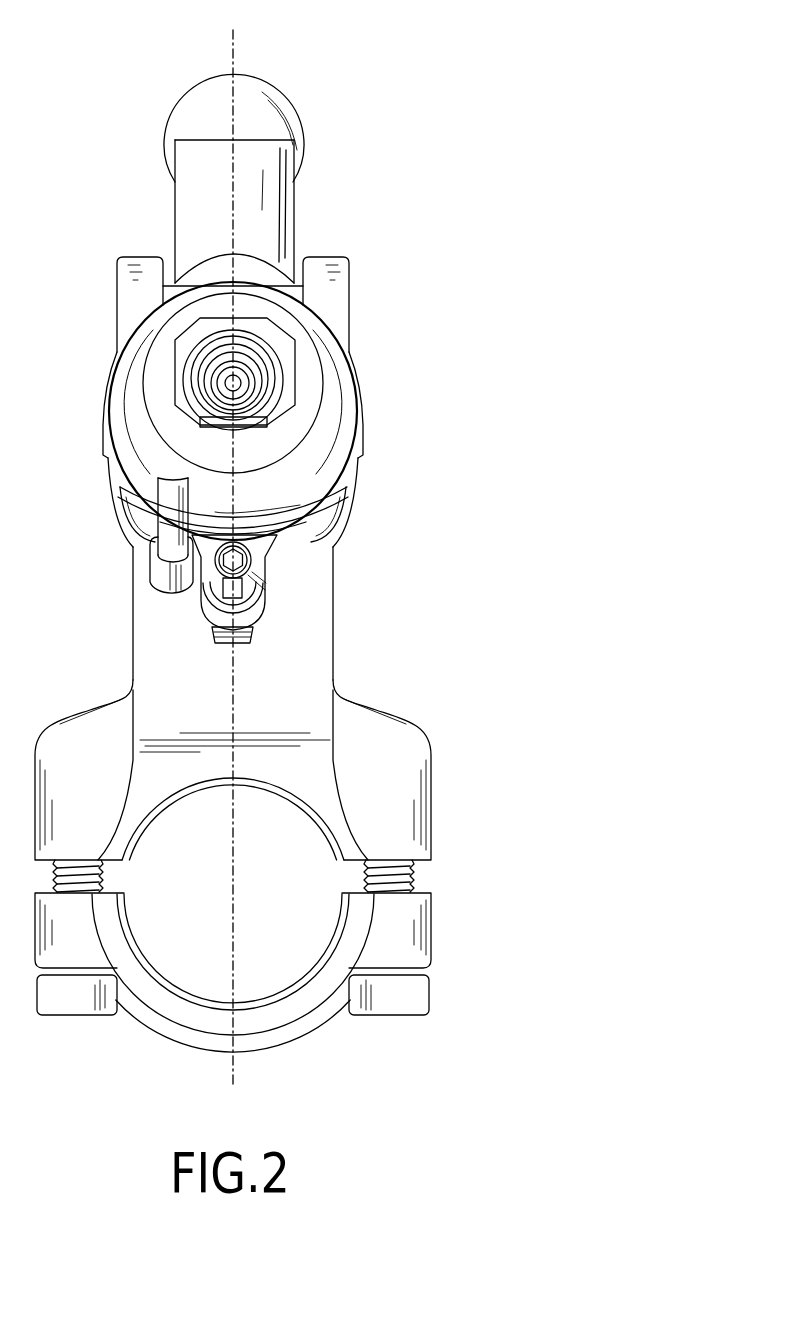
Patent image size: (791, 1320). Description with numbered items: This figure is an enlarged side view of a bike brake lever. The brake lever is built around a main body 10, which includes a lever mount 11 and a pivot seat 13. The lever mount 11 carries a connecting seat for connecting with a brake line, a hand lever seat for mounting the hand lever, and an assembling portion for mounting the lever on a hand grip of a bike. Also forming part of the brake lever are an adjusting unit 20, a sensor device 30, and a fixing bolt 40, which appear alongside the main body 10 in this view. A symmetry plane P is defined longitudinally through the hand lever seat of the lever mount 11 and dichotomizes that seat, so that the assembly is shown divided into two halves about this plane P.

The main body 10 is at (364, 304).
The lever mount 11 is at (302, 676).
The pivot seat 13 is at (294, 563).
The adjusting unit 20 is at (247, 577).
The sensor device 30 is at (148, 594).
The fixing bolt 40 is at (222, 658).
The symmetry plane P is at (236, 45).